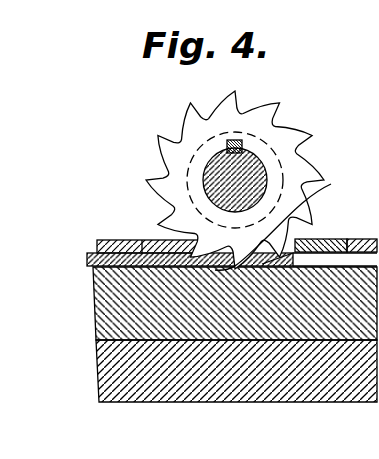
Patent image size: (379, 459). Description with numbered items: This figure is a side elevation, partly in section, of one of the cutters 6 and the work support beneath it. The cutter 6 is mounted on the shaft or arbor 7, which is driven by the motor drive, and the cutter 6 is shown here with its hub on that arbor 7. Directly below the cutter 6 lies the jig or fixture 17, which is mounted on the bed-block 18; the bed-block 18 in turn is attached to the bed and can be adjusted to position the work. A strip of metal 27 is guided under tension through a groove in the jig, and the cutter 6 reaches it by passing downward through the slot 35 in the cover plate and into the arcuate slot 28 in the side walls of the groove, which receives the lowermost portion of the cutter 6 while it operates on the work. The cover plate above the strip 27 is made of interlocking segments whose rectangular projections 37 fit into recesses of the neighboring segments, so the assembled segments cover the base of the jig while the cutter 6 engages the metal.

The cutter 6 is at (156, 143).
The shaft or arbor 7 is at (203, 180).
The jig or fixture 17 is at (100, 327).
The bed-block 18 is at (99, 391).
The strip of metal 27 is at (87, 257).
The arcuate slot 28 is at (293, 253).
The slot 35 is at (284, 218).
The rectangular projection 37 is at (142, 240).